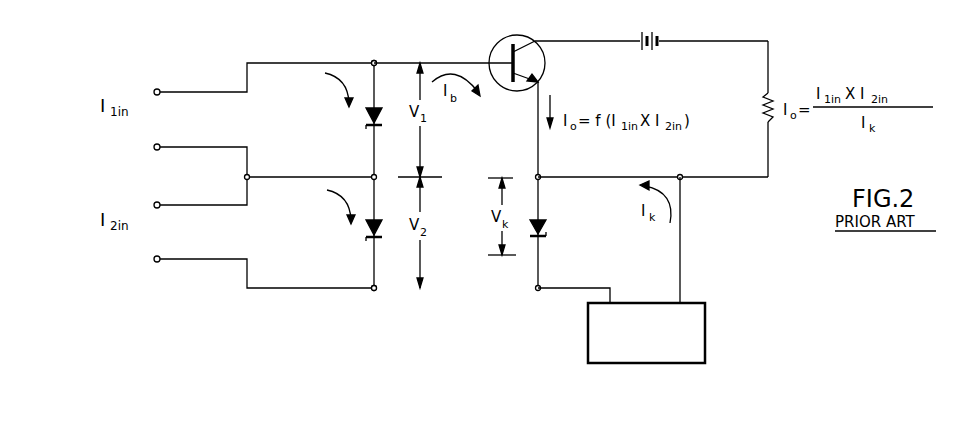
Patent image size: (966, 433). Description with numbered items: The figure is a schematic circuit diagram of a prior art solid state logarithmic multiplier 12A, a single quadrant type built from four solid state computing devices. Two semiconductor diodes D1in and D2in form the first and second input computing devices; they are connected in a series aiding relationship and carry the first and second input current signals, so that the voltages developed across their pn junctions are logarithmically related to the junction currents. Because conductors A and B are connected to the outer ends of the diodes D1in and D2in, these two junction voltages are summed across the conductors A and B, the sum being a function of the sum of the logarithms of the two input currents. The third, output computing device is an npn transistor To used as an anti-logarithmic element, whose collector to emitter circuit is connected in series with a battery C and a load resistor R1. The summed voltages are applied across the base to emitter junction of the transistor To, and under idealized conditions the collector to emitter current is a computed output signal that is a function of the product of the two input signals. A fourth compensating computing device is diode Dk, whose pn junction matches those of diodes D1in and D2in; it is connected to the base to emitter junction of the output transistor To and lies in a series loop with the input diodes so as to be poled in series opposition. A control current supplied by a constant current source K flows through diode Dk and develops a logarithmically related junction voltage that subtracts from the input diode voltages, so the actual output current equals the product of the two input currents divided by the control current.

The prior art solid state logarithmic multiplier 12A is at (482, 40).
The conductor A is at (428, 59).
The conductor B is at (436, 290).
The battery C is at (654, 37).
The constant current source K is at (692, 303).
The output transistor To is at (548, 63).
The load resistor R1 is at (764, 100).
The compensating diode Dk is at (546, 224).
The first input diode D1in is at (370, 127).
The second input diode D2in is at (371, 241).